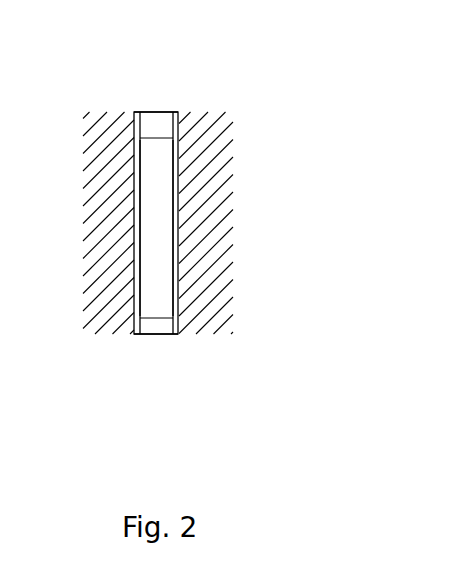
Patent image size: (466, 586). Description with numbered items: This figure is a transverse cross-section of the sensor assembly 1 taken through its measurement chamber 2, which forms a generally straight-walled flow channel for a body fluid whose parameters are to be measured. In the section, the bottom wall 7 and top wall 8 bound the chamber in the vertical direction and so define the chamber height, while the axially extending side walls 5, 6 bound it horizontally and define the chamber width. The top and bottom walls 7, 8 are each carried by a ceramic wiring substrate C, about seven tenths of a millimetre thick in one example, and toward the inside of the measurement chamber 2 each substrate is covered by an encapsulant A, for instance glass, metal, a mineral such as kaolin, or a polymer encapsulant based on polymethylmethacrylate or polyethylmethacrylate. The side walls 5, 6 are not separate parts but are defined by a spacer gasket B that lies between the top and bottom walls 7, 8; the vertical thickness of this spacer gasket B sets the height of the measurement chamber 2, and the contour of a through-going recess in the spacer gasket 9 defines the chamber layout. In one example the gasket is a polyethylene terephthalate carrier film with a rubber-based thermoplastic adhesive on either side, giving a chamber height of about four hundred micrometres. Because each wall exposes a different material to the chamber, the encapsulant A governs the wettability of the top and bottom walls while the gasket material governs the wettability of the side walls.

The sensor assembly 1 is at (233, 83).
The measurement chamber 2 is at (116, 223).
The side wall 5 is at (221, 343).
The side wall 6 is at (231, 161).
The bottom wall 7 is at (248, 228).
The top wall 8 is at (231, 228).
The spacer gasket 9 is at (185, 206).
The encapsulant A is at (161, 273).
The spacer gasket B is at (89, 262).
The ceramic wiring substrate C is at (161, 258).